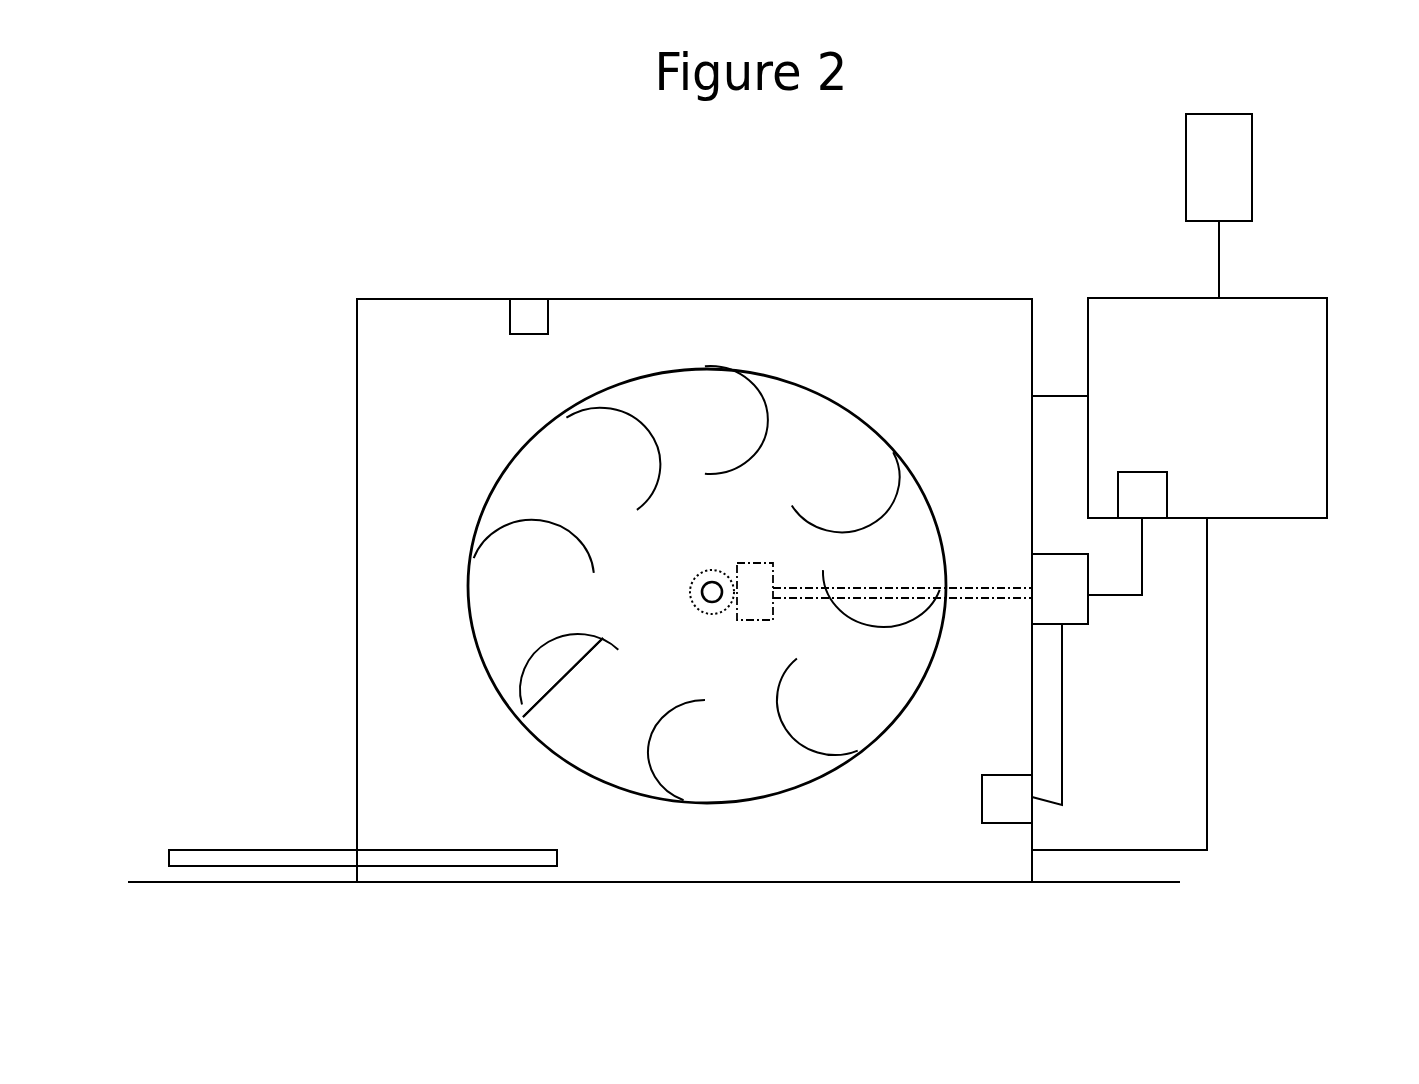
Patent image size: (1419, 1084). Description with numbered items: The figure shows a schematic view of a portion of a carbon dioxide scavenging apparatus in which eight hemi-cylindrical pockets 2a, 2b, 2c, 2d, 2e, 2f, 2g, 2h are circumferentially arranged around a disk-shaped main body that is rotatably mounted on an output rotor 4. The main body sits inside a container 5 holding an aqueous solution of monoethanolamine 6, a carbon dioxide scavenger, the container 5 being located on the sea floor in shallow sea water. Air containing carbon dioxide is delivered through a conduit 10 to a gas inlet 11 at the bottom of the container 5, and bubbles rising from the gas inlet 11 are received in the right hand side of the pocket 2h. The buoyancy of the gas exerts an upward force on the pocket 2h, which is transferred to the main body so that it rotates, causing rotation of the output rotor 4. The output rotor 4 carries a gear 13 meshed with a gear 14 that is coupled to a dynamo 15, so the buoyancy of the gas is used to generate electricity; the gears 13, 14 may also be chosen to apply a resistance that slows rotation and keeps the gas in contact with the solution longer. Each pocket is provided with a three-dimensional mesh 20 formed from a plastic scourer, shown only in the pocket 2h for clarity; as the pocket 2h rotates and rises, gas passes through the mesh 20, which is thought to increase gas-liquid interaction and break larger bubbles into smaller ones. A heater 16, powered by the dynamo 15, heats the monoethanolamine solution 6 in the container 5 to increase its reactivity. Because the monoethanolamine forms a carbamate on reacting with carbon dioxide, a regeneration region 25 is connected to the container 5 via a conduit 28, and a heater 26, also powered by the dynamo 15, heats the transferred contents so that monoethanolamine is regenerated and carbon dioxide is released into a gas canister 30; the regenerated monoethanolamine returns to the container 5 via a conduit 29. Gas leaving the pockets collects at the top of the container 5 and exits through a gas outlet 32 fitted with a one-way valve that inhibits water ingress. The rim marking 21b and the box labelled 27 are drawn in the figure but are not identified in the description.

The pocket 2a is at (512, 535).
The pocket 2b is at (633, 447).
The pocket 2c is at (734, 392).
The pocket 2d is at (843, 500).
The pocket 2e is at (893, 575).
The pocket 2f is at (830, 730).
The pocket 2g is at (667, 753).
The pocket 2h is at (533, 717).
The output rotor 4 is at (712, 592).
The container 5 is at (357, 319).
The aqueous solution of monoethanolamine 6 is at (398, 407).
The conduit 10 is at (309, 860).
The gas inlet 11 is at (557, 858).
The gear 13 is at (710, 572).
The gear 14 is at (755, 577).
The dynamo 15 is at (1068, 613).
The heater 16 is at (1007, 810).
The mesh 20 is at (550, 660).
The rotor rim 21b is at (566, 410).
The regeneration region 25 is at (1291, 439).
The heater 26 is at (1142, 497).
The controller housing 27 is at (1255, 297).
The conduit 28 is at (1060, 393).
The conduit 29 is at (1216, 748).
The gas canister 30 is at (1207, 147).
The gas outlet 32 is at (528, 308).